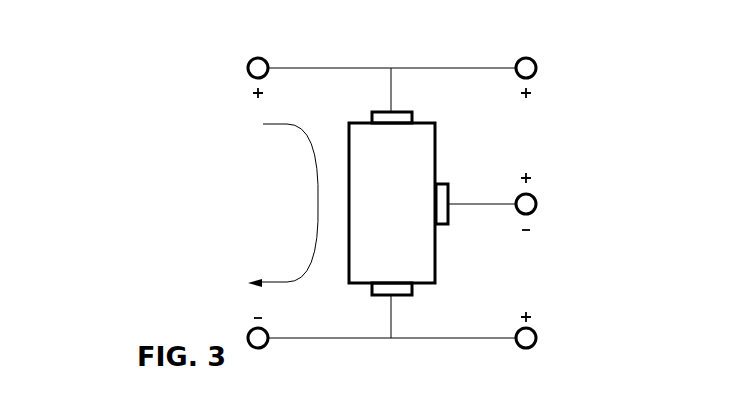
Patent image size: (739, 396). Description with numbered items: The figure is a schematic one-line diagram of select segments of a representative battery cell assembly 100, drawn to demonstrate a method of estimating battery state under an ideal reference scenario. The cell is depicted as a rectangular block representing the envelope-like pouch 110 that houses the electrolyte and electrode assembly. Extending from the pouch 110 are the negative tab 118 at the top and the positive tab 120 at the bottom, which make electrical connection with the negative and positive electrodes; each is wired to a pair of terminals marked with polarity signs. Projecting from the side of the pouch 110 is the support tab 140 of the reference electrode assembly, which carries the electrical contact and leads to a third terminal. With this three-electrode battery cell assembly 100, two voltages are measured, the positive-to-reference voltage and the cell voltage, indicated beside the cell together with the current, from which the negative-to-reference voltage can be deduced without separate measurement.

The battery cell assembly 100 is at (186, 45).
The pouch 110 is at (345, 93).
The negative tab 118 is at (412, 118).
The positive tab 120 is at (412, 292).
The support tab 140 is at (444, 184).